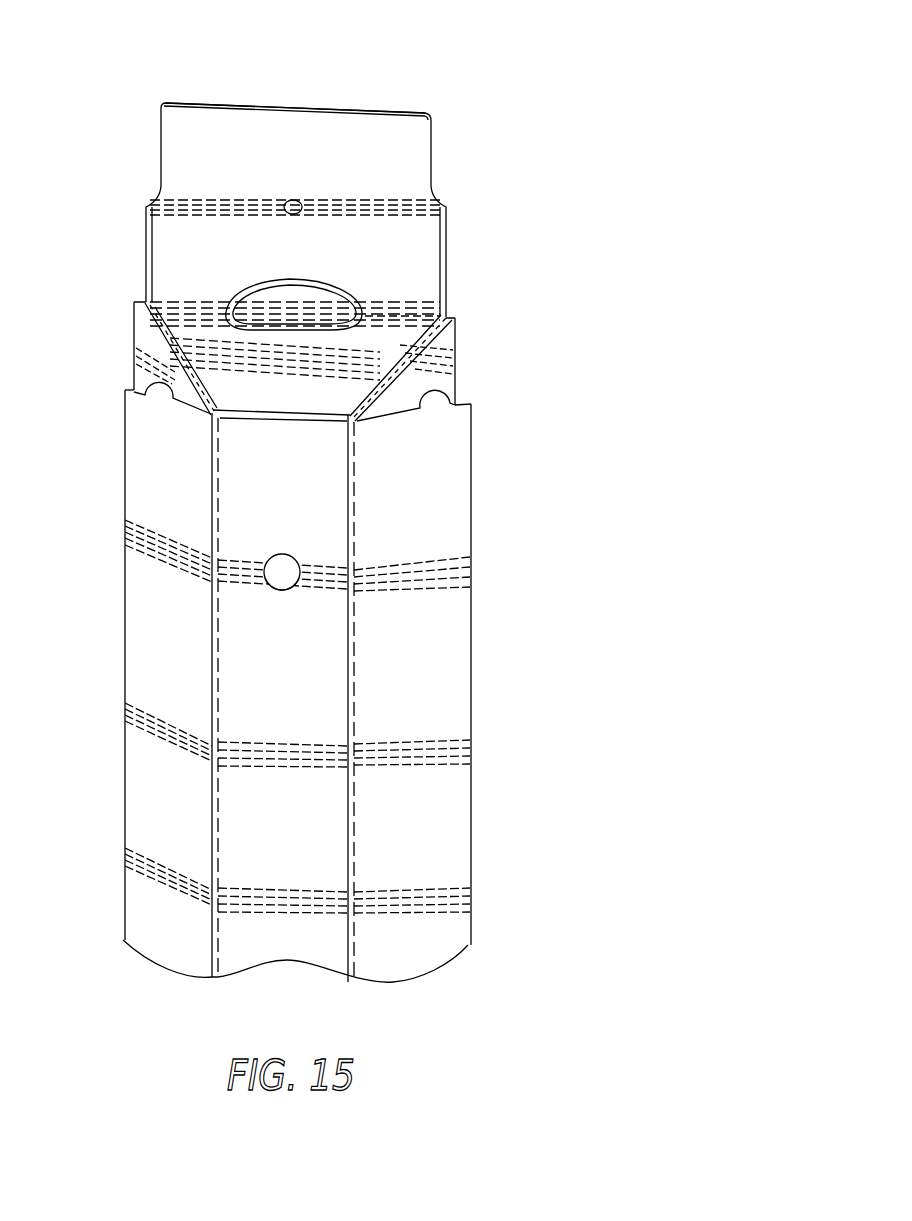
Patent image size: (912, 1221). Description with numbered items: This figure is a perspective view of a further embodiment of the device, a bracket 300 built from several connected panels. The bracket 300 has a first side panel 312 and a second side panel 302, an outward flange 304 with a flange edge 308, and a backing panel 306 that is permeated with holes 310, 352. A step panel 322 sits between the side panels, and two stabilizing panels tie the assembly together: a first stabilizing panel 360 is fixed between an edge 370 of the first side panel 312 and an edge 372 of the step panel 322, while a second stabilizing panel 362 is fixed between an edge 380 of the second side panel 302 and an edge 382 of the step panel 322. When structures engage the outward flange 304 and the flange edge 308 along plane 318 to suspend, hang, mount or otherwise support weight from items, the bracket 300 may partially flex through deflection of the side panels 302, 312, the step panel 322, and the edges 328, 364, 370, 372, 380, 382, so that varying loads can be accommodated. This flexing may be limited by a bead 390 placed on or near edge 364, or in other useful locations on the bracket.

The bracket 300 is at (500, 50).
The second side panel 302 is at (450, 528).
The outward flange 304 is at (433, 163).
The backing panel 306 is at (317, 718).
The flange edge 308 is at (308, 106).
The hole 310 is at (295, 200).
The first side panel 312 is at (152, 750).
The plane 318 is at (183, 148).
The step panel 322 is at (445, 342).
The edge 328 is at (200, 570).
The hole 352 is at (282, 554).
The first stabilizing panel 360 is at (162, 378).
The second stabilizing panel 362 is at (447, 385).
The edge 364 is at (383, 312).
The edge of first side panel 370 is at (140, 393).
The edge of step panel 372 is at (163, 345).
The edge of second side panel 380 is at (450, 403).
The edge of step panel 382 is at (452, 318).
The bead 390 is at (256, 285).